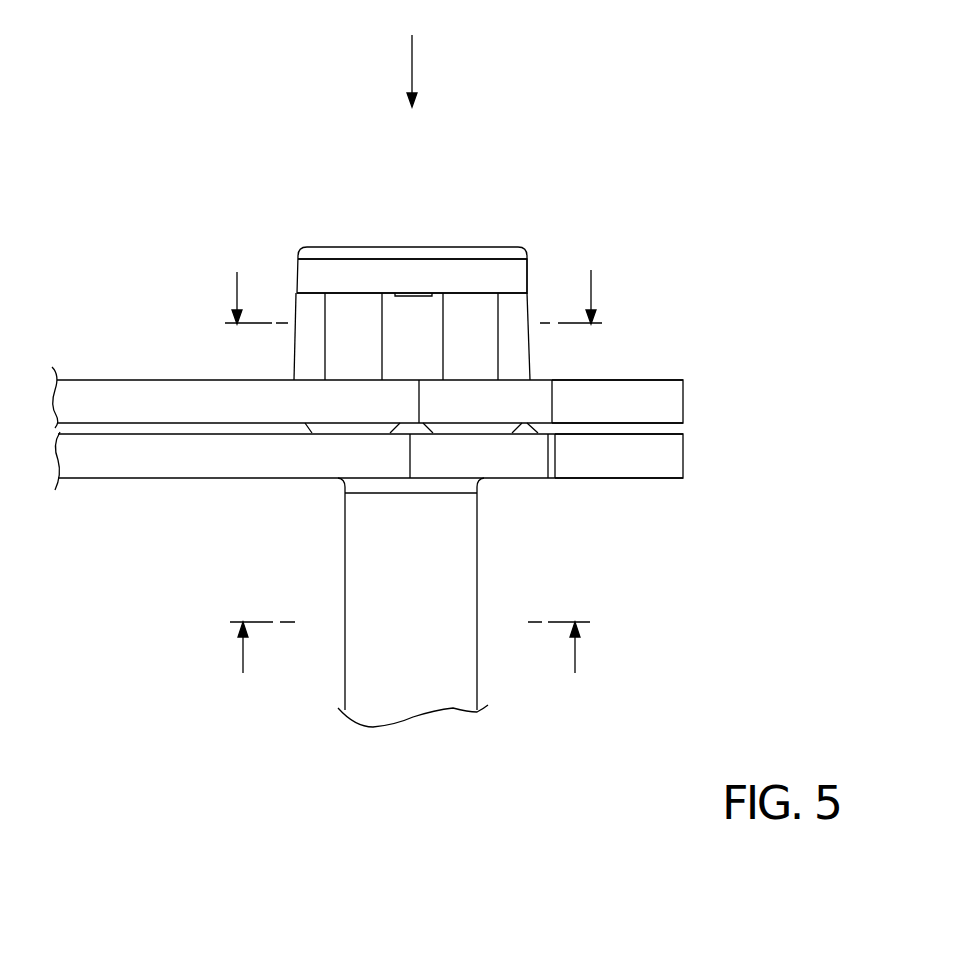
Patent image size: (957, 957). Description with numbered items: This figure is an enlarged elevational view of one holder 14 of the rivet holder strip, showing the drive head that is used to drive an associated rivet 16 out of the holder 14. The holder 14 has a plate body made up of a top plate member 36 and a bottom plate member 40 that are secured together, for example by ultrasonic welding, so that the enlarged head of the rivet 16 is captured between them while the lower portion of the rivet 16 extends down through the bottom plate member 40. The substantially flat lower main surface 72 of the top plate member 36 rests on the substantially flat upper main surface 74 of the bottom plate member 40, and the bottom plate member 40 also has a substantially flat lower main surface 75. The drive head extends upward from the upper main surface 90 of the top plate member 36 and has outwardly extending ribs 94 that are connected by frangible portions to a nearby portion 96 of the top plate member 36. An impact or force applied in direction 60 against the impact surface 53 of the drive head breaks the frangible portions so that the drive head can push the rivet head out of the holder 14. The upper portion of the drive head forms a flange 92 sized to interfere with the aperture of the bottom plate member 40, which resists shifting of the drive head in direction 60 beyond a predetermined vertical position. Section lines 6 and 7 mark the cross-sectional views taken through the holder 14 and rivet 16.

The section line 6- 6 is at (413, 283).
The section line 7- 7 is at (410, 662).
The holder 14 is at (205, 392).
The rivet 16 is at (463, 670).
The top plate member 36 is at (368, 273).
The bottom plate member 40 is at (590, 463).
The impact surface 53 is at (478, 246).
The direction 60 is at (412, 62).
The lower main surface 72 is at (663, 423).
The upper main surface 74 is at (662, 435).
The lower main surface 75 is at (655, 480).
The upper main surface 90 is at (662, 378).
The flange 92 is at (541, 262).
The rib 94 is at (308, 320).
The top plate member portion 96 is at (277, 408).